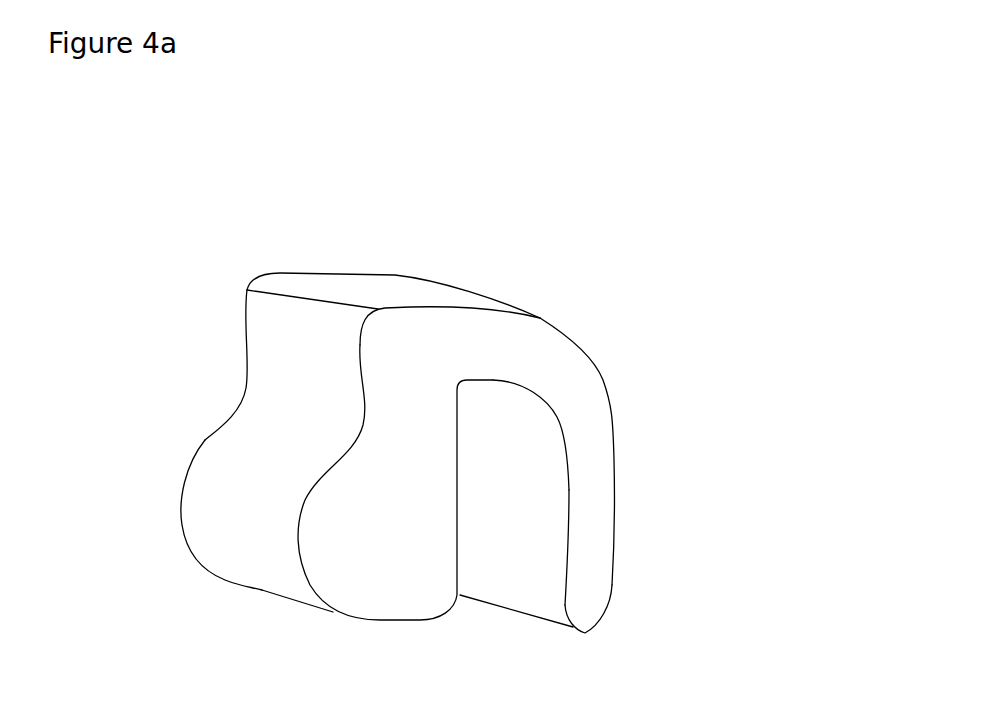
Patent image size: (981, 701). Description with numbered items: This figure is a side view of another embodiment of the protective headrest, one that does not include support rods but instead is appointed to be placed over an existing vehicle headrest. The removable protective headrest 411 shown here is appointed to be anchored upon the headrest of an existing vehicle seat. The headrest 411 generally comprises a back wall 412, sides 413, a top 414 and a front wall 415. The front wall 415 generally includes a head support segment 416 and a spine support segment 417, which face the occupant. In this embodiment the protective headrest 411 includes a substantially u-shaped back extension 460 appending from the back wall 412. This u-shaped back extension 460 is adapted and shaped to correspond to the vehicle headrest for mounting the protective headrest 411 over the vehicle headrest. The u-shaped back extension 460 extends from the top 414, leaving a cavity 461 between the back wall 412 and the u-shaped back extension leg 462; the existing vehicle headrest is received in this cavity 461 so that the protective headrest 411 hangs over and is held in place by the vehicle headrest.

The removable protective headrest 411 is at (483, 340).
The back wall 412 is at (458, 513).
The sides 413 is at (422, 570).
The top 414 is at (352, 293).
The front wall 415 is at (240, 432).
The head support segment 416 is at (265, 397).
The spine support segment 417 is at (237, 525).
The u-shaped back extension 460 is at (610, 583).
The cavity 461 is at (480, 537).
The u-shaped back extension leg 462 is at (617, 543).